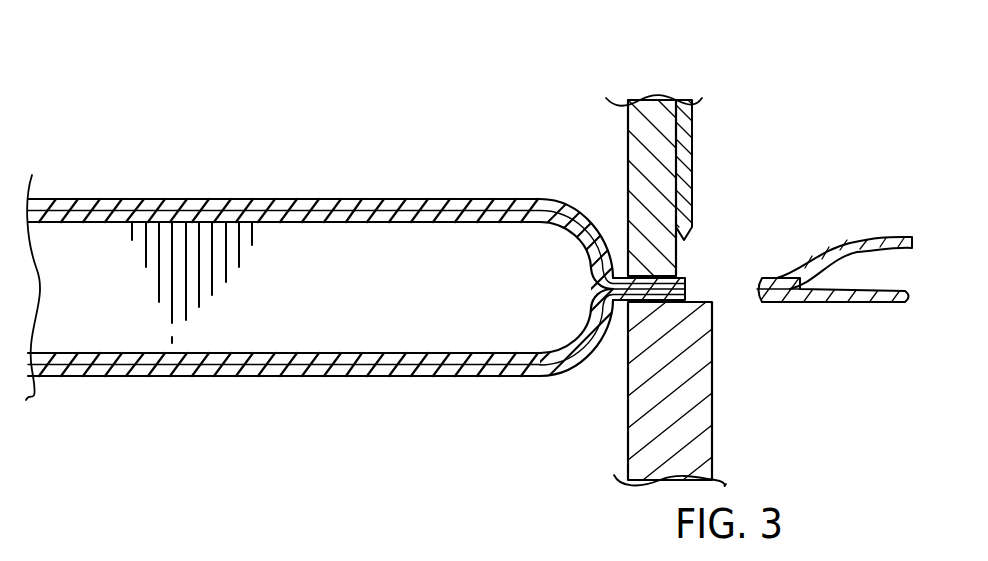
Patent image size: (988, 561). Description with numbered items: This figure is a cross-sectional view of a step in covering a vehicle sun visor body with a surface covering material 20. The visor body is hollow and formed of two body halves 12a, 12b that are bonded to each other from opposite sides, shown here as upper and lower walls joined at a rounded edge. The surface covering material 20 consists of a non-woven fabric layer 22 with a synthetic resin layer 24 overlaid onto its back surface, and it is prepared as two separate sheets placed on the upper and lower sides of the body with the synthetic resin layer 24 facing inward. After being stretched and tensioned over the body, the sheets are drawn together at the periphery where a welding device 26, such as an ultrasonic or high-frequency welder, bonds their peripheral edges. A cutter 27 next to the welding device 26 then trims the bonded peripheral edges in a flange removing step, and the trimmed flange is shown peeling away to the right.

The body half 12a is at (143, 215).
The body half 12b is at (152, 357).
The surface covering material 20 is at (503, 28).
The non-woven fabric layer 22 is at (345, 205).
The synthetic resin layer 24 is at (410, 207).
The welding device 26 is at (668, 130).
The cutter 27 is at (685, 168).